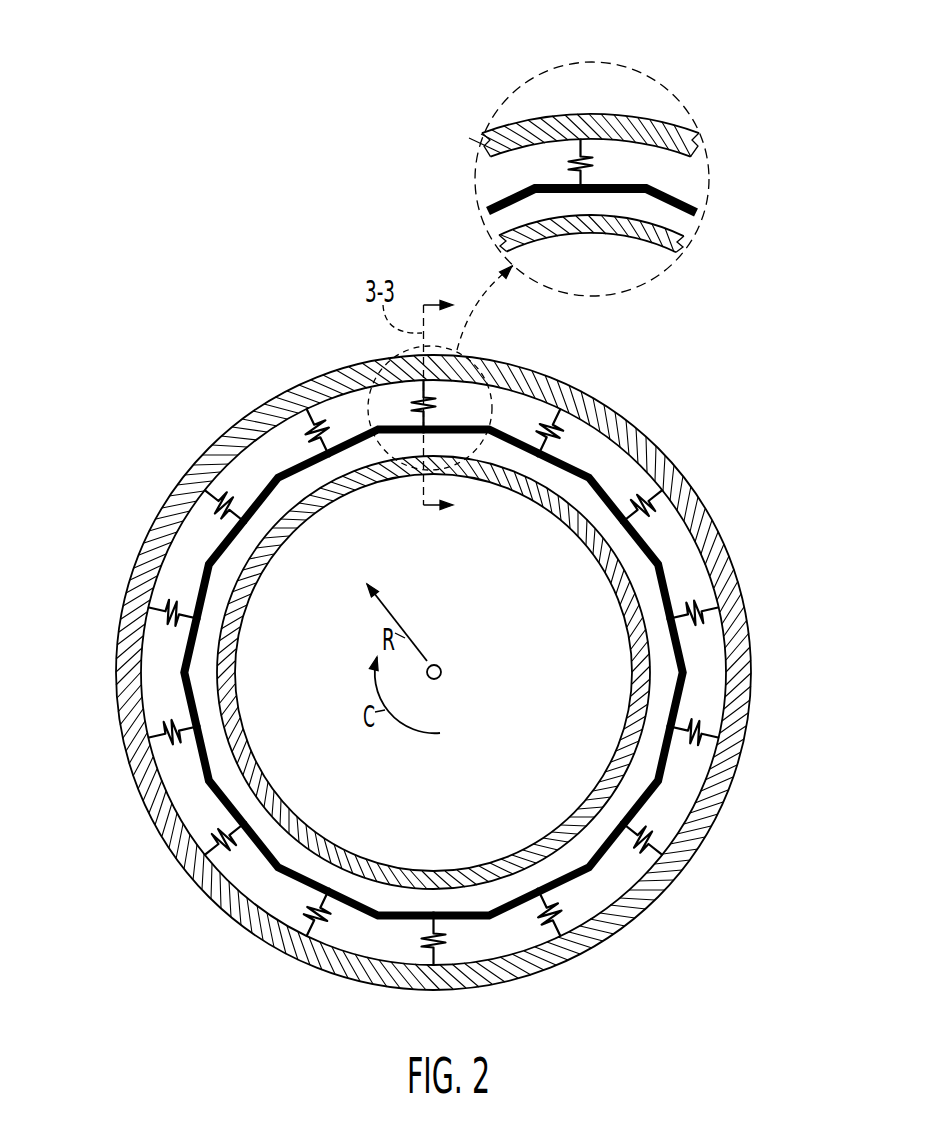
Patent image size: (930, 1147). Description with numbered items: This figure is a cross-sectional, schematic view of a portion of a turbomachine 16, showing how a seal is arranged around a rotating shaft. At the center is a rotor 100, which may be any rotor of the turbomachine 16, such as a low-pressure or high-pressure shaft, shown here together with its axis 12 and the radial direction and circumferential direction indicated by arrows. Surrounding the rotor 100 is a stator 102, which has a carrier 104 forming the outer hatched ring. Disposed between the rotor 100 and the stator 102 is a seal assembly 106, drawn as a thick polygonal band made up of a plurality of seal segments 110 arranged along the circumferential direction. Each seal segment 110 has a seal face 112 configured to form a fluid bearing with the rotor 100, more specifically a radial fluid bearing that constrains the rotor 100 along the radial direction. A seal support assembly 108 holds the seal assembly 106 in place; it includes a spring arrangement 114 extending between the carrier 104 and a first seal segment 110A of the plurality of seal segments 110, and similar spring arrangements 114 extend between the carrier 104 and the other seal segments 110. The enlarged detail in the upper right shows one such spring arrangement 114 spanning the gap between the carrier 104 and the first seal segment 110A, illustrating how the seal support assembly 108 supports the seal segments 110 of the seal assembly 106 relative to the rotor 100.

The centerline axis 12 is at (441, 670).
The turbomachine 16 is at (597, 48).
The rotor 100 is at (430, 451).
The stator 102 is at (242, 360).
The carrier 104 is at (652, 442).
The seal assembly 106 is at (650, 528).
The seal support assembly 108 is at (621, 152).
The seal segments 110 is at (51, 704).
The first seal segment 110A is at (652, 197).
The seal face 112 is at (433, 672).
The spring arrangement 114 is at (602, 158).